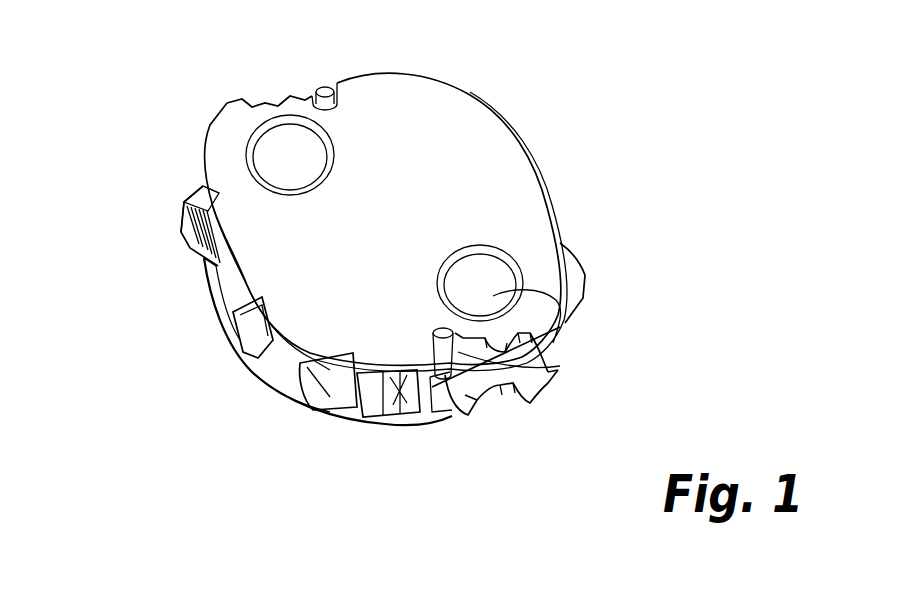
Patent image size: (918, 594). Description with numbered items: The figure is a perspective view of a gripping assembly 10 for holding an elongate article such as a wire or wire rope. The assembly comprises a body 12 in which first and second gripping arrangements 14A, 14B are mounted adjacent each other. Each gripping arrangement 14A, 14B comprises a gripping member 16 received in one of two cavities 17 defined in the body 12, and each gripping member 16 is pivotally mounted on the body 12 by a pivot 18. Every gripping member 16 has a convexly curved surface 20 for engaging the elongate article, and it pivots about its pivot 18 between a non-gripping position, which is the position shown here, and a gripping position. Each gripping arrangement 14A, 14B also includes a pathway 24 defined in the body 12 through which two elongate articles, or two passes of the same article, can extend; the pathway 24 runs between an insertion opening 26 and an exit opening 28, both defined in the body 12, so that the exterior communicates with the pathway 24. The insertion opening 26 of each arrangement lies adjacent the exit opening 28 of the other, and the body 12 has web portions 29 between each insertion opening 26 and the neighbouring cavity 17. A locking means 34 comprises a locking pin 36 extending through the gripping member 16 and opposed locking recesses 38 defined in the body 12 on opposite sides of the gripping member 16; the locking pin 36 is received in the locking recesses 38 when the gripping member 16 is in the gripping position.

The gripping assembly 10 is at (170, 283).
The body 12 is at (483, 160).
The first gripping arrangement 14A is at (183, 185).
The second gripping arrangement 14B is at (543, 370).
The gripping member 16 is at (180, 233).
The cavity 17 is at (232, 292).
The pivot 18 is at (305, 150).
The convexly curved surface 20 is at (197, 257).
The pathway 24 is at (318, 398).
The insertion opening 26 is at (303, 362).
The exit opening 28 is at (262, 345).
The web portion 29 is at (373, 400).
The locking means 34 is at (467, 377).
The locking pin 36 is at (493, 296).
The locking recess 38 is at (543, 360).